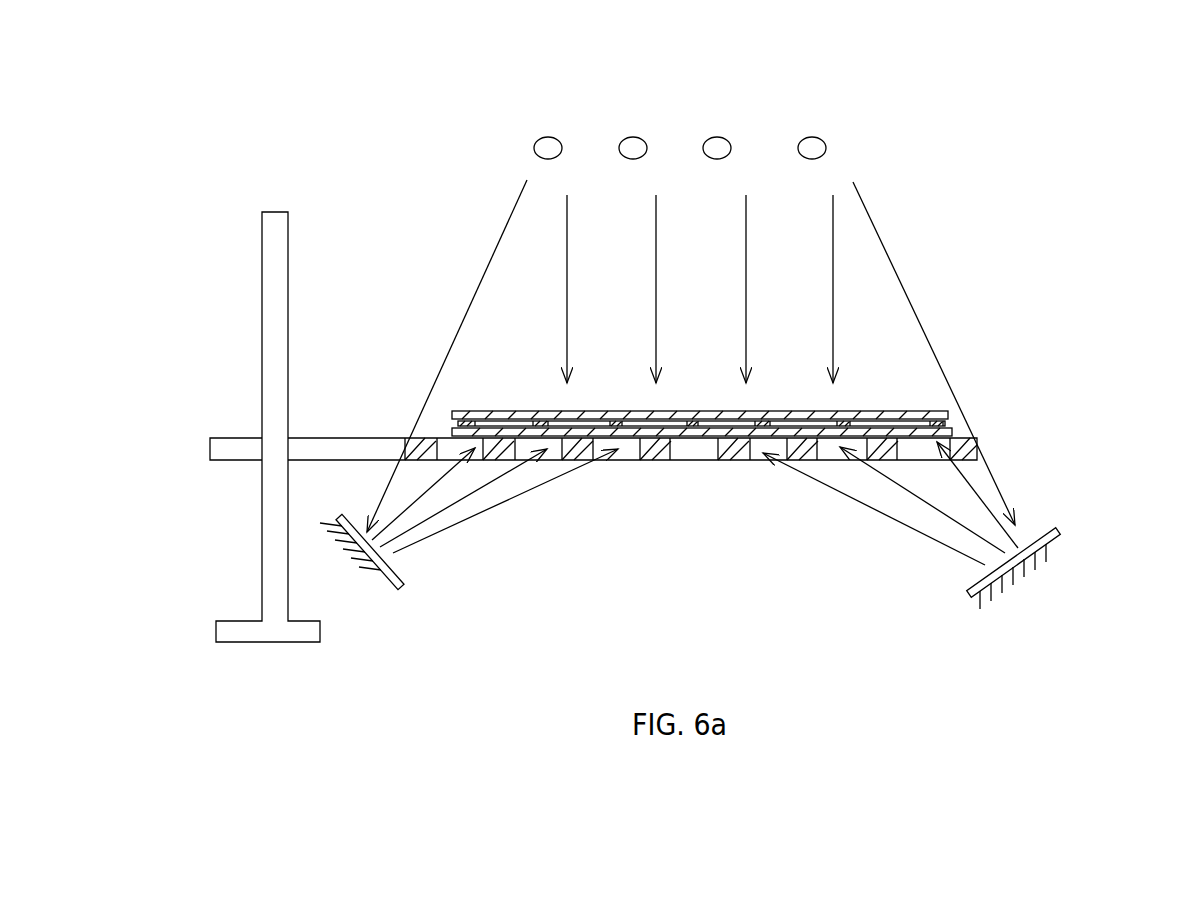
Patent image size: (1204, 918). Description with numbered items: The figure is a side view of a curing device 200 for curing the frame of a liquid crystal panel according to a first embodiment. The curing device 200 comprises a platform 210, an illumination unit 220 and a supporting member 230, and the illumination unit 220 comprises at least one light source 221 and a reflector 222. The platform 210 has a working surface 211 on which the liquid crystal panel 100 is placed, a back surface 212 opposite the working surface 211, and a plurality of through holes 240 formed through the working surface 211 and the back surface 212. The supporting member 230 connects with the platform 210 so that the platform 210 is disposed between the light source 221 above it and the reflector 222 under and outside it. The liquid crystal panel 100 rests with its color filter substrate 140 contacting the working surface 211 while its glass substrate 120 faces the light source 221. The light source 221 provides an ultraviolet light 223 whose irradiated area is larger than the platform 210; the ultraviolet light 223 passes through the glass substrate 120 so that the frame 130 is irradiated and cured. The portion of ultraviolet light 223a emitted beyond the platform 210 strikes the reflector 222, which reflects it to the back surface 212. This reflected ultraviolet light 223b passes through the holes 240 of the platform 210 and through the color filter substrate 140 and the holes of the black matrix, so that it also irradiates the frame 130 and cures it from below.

The curing device 200 is at (273, 133).
The liquid crystal panel 100 is at (902, 406).
The glass substrate 120 is at (948, 416).
The frame 130 is at (767, 423).
The color filter substrate 140 is at (975, 437).
The platform 210 is at (710, 454).
The working surface 211 is at (753, 458).
The back surface 212 is at (652, 461).
The through holes 240 is at (695, 460).
The supporting member 230 is at (328, 440).
The illumination unit 220 is at (818, 138).
The light source 221 is at (716, 146).
The reflector 222 is at (400, 590).
The ultraviolet light 223 is at (834, 290).
The ultraviolet light emitted beyond the platform 223a is at (489, 262).
The reflected ultraviolet light 223b is at (886, 519).